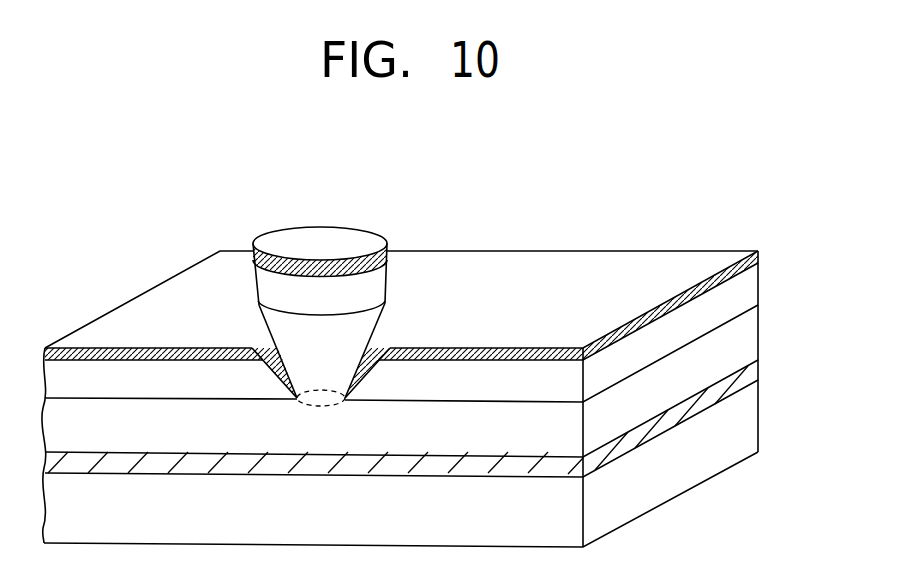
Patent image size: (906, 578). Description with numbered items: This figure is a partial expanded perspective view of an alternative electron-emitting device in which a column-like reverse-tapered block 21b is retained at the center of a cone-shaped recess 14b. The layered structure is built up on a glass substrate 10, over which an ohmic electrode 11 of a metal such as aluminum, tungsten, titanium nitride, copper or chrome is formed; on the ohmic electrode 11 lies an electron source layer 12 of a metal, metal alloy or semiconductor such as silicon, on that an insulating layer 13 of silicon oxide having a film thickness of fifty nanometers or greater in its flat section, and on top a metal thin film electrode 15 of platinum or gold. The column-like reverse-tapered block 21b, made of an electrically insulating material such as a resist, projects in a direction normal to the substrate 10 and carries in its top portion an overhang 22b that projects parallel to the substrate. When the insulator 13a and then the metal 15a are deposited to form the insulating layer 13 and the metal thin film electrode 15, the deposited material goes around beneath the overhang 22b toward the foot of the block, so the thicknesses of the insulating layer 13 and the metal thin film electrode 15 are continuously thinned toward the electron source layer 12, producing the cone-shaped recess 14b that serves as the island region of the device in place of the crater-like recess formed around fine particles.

The glass substrate 10 is at (748, 432).
The ohmic electrode 11 is at (748, 376).
The electron source layer 12 is at (748, 338).
The insulating layer 13 is at (748, 295).
The metal thin film electrode 15 is at (760, 263).
The insulator 13a is at (382, 288).
The metal 15a is at (336, 242).
The cone-shaped recess 14b is at (258, 382).
The column-like reverse-tapered block 21b is at (292, 341).
The overhang 22b is at (390, 329).